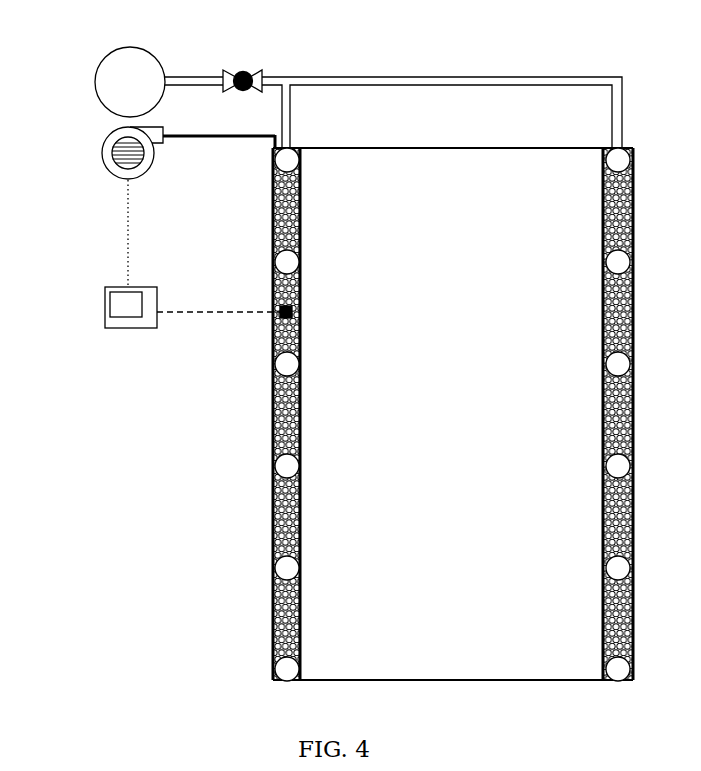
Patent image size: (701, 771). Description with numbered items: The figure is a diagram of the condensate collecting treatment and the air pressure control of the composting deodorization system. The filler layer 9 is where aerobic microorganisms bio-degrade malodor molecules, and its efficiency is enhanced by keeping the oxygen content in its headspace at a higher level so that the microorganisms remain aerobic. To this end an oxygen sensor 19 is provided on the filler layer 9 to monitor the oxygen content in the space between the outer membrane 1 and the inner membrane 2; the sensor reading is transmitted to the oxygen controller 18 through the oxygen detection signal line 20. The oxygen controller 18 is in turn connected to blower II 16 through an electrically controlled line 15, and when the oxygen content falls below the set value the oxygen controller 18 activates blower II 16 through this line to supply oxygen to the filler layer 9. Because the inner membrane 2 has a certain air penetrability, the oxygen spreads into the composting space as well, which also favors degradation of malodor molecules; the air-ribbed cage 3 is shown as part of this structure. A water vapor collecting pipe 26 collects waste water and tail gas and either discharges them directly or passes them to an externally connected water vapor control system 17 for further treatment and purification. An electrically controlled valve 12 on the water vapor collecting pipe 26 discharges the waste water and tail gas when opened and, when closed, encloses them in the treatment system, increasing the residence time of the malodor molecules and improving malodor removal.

The outer membrane 1 is at (460, 148).
The inner membrane 2 is at (301, 493).
The air-ribbed cage 3 is at (298, 358).
The filler layer 9 is at (295, 413).
The electrically controlled valve 12 is at (255, 72).
The electrically controlled line 15 is at (125, 240).
The blower II 16 is at (109, 171).
The water vapor control system 17 is at (101, 102).
The oxygen controller 18 is at (103, 327).
The oxygen sensor 19 is at (297, 300).
The oxygen detection signal line 20 is at (220, 314).
The water vapor collecting pipe 26 is at (457, 87).